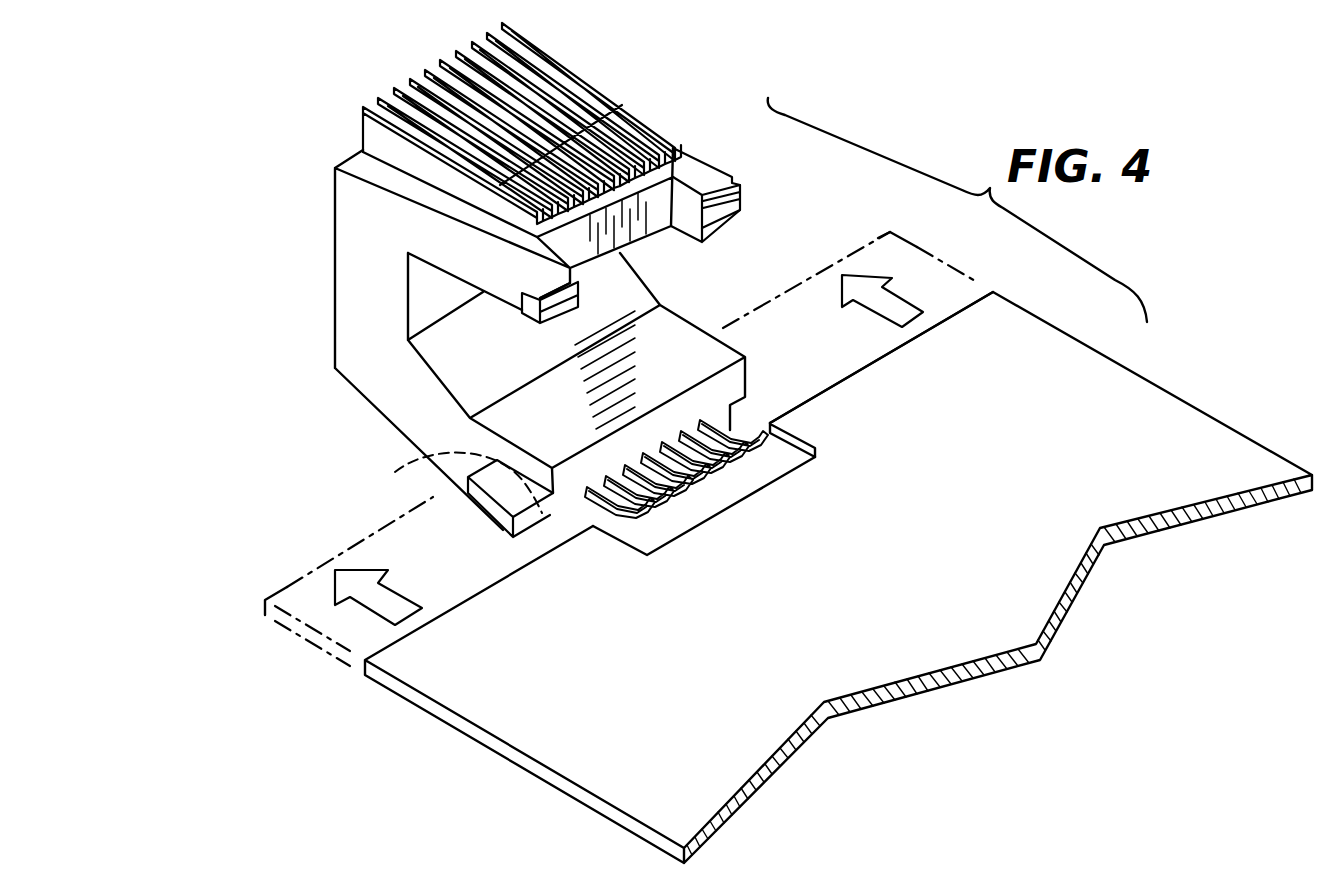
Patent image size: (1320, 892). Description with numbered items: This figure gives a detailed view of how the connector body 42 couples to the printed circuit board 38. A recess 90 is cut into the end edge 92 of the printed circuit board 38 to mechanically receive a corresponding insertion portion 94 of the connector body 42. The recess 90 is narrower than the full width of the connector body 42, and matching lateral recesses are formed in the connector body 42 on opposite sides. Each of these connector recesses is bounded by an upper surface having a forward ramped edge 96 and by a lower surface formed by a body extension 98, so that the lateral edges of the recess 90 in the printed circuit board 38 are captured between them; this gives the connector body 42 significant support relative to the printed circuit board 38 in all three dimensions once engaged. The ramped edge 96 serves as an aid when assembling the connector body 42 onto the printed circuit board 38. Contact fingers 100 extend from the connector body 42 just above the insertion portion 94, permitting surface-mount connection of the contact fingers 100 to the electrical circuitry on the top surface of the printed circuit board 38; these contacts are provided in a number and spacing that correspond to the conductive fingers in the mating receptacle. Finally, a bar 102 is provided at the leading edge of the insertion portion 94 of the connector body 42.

The printed circuit board 38 is at (680, 735).
The connector body 42 is at (360, 343).
The recess 90 is at (787, 438).
The end edge 92 is at (843, 383).
The insertion portion 94 is at (585, 505).
The forward ramped edge 96 is at (407, 470).
The body extension 98 is at (498, 517).
The contact fingers 100 is at (533, 117).
The bar 102 is at (723, 205).